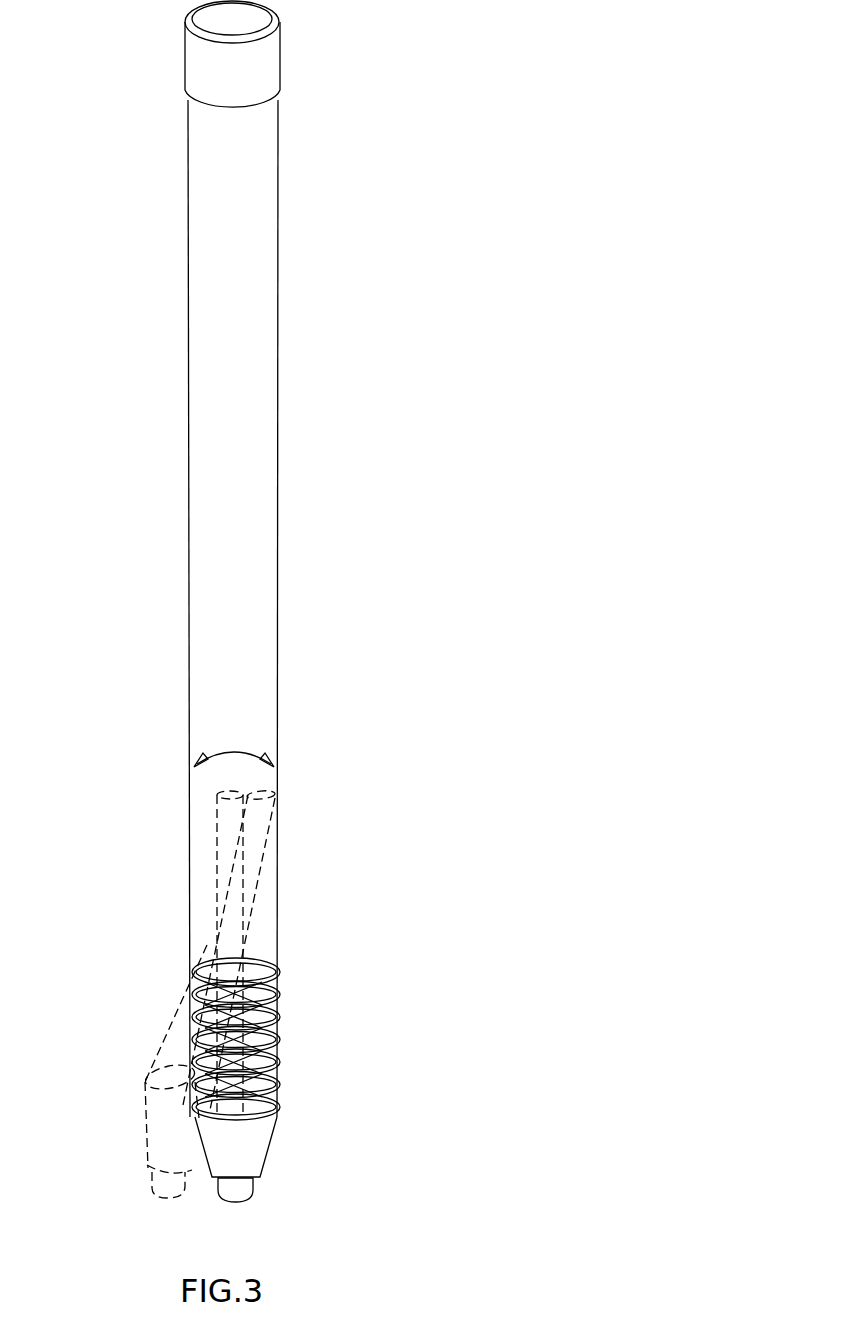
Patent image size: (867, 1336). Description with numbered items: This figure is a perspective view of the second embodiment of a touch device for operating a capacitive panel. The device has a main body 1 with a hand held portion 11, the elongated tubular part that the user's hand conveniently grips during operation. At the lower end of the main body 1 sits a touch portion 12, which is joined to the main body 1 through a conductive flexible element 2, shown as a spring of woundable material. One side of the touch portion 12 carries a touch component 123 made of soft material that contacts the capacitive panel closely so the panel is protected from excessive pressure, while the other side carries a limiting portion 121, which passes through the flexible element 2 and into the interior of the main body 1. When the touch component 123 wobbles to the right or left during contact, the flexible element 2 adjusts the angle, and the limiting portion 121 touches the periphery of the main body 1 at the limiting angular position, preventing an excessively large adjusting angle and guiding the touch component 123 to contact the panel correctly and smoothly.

The main body 1 is at (343, 572).
The hand held portion 11 is at (245, 392).
The touch portion 12 is at (237, 1153).
The limiting portion 121 is at (228, 953).
The touch component 123 is at (238, 1192).
The flexible element 2 is at (205, 1025).